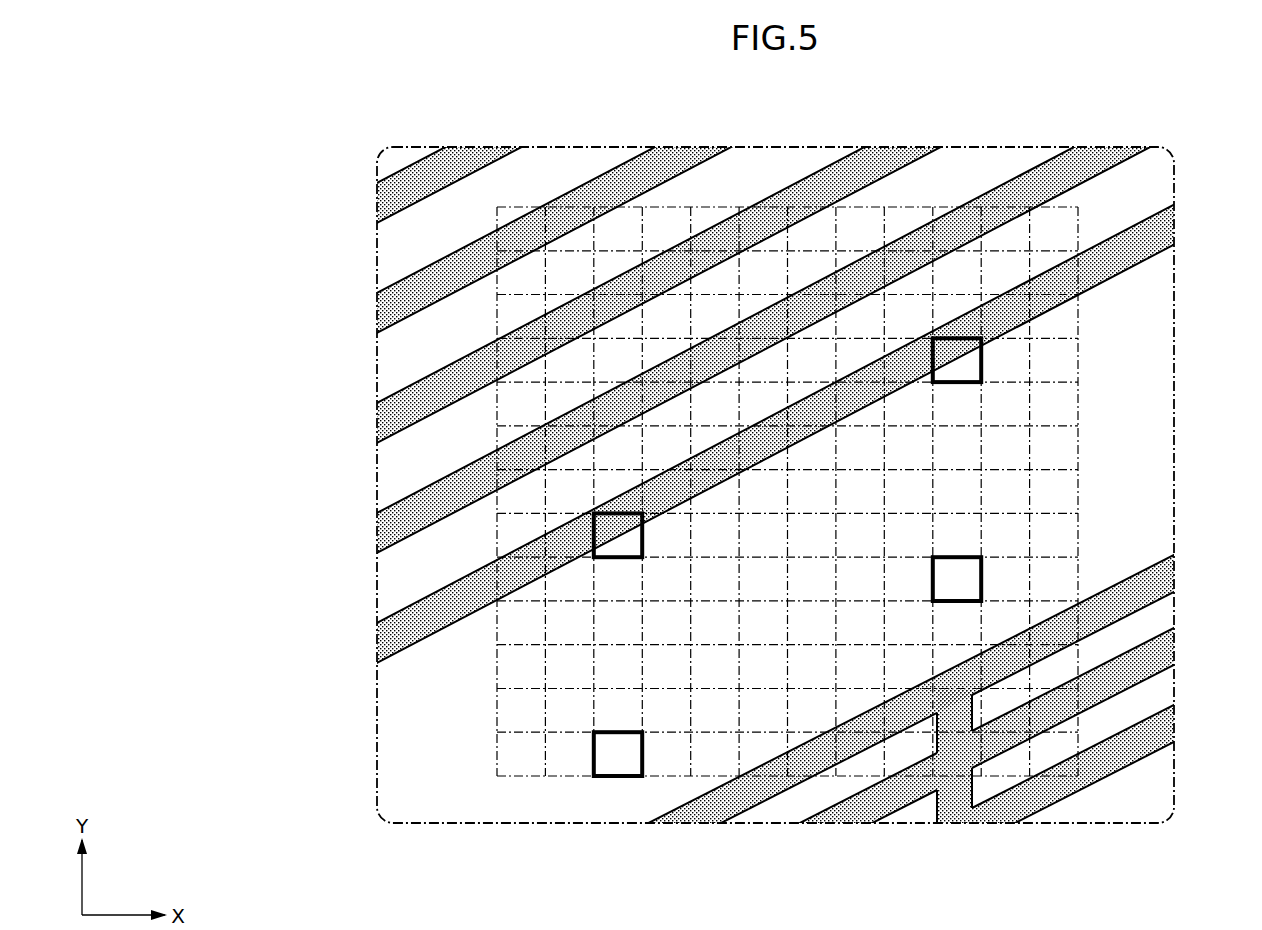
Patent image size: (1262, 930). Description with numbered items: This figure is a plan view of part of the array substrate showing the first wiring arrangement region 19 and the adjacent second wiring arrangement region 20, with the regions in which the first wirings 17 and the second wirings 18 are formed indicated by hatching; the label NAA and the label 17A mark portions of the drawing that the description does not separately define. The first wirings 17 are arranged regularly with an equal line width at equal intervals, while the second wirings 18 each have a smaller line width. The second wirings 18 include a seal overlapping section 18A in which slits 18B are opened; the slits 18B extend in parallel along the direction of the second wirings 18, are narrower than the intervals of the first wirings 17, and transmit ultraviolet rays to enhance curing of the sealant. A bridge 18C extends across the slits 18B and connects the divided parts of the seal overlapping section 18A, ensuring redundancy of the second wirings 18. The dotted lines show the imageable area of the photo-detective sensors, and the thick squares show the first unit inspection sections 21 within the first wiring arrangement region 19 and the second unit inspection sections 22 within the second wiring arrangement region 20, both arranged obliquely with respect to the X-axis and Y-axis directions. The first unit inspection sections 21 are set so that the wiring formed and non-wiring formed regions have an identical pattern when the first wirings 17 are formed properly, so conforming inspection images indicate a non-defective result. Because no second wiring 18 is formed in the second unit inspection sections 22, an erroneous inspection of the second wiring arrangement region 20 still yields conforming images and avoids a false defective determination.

The first wiring 17 is at (766, 351).
The end portion of first wiring line 17A is at (407, 410).
The second wiring 18 is at (931, 711).
The seal overlapping section 18A is at (1040, 803).
The slit 18B is at (1140, 607).
The bridge 18C is at (948, 803).
The first wiring arrangement region 19 is at (958, 185).
The second wiring arrangement region 20 is at (1105, 722).
The first unit inspection section 21 is at (983, 360).
The second unit inspection section 22 is at (985, 580).
The non-active area NAA is at (437, 793).